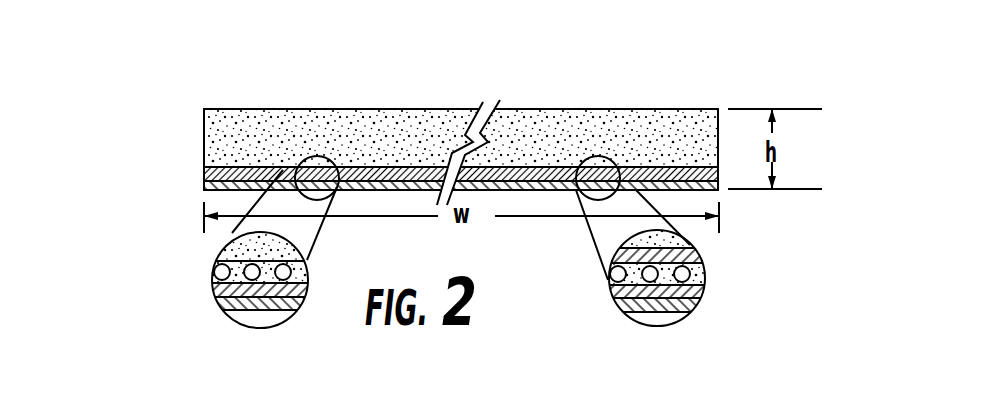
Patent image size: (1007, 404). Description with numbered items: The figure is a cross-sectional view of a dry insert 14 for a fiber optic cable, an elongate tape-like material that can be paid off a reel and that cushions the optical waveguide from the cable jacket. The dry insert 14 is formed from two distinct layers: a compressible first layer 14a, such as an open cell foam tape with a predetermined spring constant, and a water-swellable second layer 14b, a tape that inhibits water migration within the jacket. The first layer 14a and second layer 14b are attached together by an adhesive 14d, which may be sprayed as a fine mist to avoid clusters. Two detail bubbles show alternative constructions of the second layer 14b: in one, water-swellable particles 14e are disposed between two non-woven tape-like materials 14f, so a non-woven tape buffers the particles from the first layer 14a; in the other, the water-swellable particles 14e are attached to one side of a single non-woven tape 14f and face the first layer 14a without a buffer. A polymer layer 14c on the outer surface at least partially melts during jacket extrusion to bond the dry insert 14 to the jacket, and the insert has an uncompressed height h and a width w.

The dry insert 14 is at (247, 108).
The first layer 14a is at (223, 143).
The second layer 14b is at (203, 173).
The polymer layer 14c is at (203, 187).
The adhesive 14d is at (227, 273).
The water-swellable particles 14e is at (293, 267).
The non-woven tape 14f is at (210, 292).